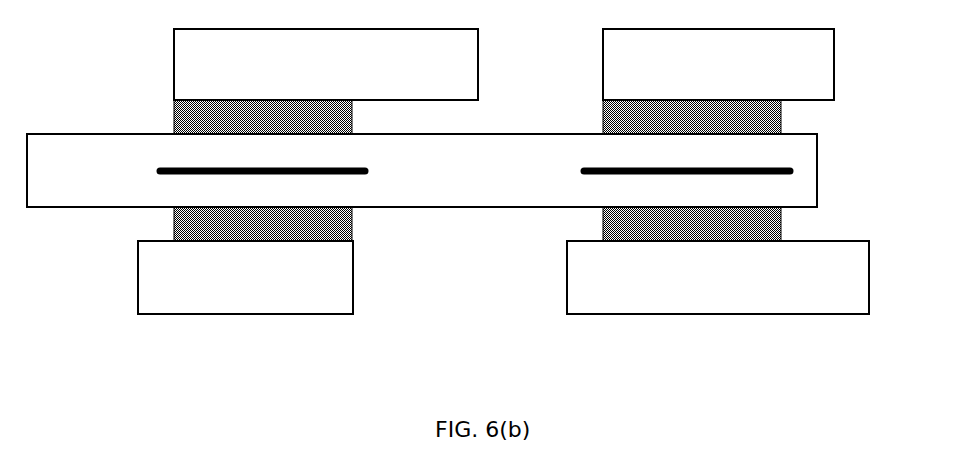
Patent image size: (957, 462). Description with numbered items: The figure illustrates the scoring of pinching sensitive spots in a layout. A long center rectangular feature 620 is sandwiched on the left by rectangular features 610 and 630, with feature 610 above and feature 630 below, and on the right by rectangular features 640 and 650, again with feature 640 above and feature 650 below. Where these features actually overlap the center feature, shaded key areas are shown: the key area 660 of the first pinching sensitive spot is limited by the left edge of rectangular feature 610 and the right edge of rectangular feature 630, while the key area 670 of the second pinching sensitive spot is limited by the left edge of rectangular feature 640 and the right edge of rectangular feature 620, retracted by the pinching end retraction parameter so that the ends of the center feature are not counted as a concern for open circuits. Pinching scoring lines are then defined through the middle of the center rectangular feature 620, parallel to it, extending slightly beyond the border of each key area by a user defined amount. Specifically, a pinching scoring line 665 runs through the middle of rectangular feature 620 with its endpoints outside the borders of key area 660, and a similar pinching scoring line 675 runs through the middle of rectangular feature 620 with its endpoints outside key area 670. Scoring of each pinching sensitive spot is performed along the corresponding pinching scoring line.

The rectangular feature 610 is at (326, 64).
The rectangular feature 620 is at (422, 170).
The rectangular feature 630 is at (245, 277).
The rectangular feature 640 is at (718, 64).
The rectangular feature 650 is at (718, 277).
The key area 660 is at (173, 118).
The pinching scoring line 665 is at (368, 172).
The key area 670 is at (601, 119).
The pinching scoring line 675 is at (793, 171).